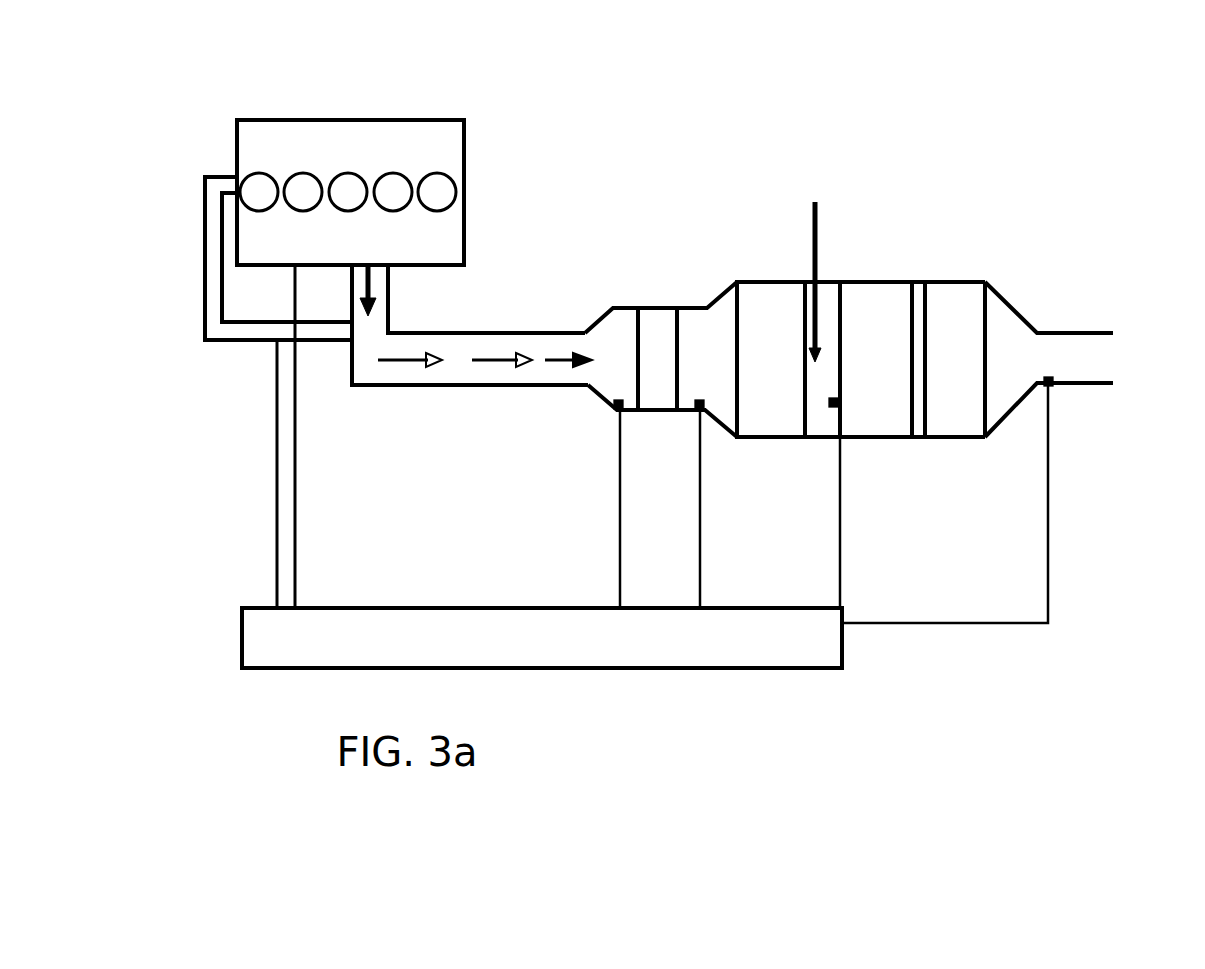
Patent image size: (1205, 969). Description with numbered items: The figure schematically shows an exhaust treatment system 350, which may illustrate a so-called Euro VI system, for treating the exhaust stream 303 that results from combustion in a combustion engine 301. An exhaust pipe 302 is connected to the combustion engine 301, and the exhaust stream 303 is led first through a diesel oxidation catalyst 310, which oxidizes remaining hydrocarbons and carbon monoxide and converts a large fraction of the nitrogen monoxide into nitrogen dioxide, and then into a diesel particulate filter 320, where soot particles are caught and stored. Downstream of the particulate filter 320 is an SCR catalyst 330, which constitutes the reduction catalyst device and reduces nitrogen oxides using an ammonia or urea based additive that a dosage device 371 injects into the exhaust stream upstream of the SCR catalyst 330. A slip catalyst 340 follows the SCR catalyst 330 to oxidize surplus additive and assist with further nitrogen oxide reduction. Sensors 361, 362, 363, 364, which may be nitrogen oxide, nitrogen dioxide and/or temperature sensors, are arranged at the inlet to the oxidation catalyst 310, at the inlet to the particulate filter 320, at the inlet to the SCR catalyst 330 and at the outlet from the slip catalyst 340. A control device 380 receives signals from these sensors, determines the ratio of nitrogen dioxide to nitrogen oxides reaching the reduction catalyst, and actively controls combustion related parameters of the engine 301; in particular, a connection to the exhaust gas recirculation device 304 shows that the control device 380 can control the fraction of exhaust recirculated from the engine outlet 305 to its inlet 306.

The combustion engine 301 is at (455, 155).
The exhaust pipe 302 is at (430, 385).
The exhaust stream 303 is at (552, 347).
The exhaust gas recirculation (EGR) device 304 is at (233, 345).
The engine outlet 305 is at (385, 268).
The engine inlet 306 is at (233, 167).
The diesel oxidation catalyst (DOC) 310 is at (658, 323).
The diesel particulate filter (DPF) 320 is at (790, 422).
The SCR catalyst 330 is at (906, 302).
The slip catalyst (SC) 340 is at (980, 302).
The exhaust treatment system 350 is at (896, 160).
The sensor 361 is at (615, 408).
The sensor 362 is at (695, 408).
The sensor 363 is at (838, 405).
The sensor 364 is at (1055, 390).
The dosage device 371 is at (828, 267).
The control device 380 is at (542, 638).